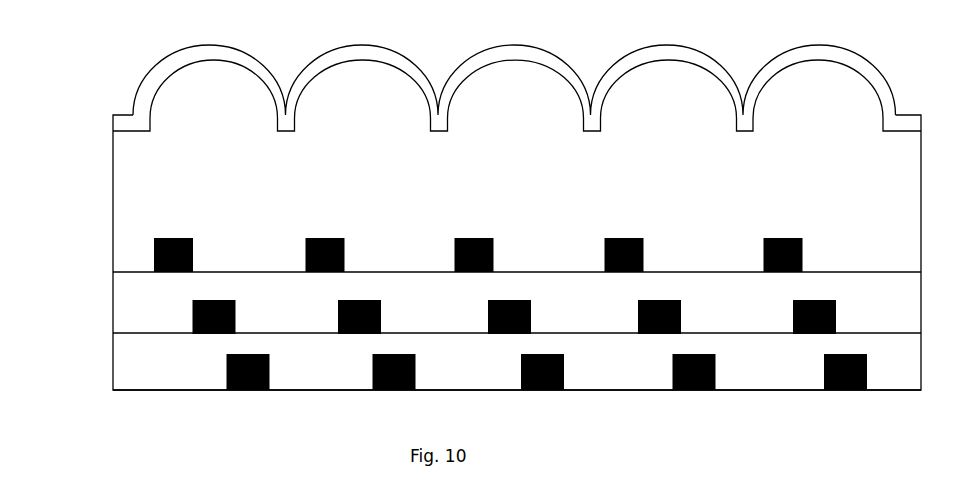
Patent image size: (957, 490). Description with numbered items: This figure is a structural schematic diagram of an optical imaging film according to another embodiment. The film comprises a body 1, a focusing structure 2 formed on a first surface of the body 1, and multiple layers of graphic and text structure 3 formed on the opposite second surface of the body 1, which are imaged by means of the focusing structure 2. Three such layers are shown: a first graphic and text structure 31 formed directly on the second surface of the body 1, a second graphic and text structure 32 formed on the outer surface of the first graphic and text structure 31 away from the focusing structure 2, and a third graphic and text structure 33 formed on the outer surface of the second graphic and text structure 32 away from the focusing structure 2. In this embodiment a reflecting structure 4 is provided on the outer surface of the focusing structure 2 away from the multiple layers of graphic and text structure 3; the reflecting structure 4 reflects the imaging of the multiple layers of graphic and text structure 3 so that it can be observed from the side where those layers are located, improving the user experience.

The body 1 is at (183, 205).
The focusing structure 2 is at (185, 117).
The multiple layers of graphic and text structure 3 is at (40, 227).
The first graphic and text structure 31 is at (155, 257).
The second graphic and text structure 32 is at (192, 316).
The third graphic and text structure 33 is at (226, 376).
The reflecting structure 4 is at (185, 58).